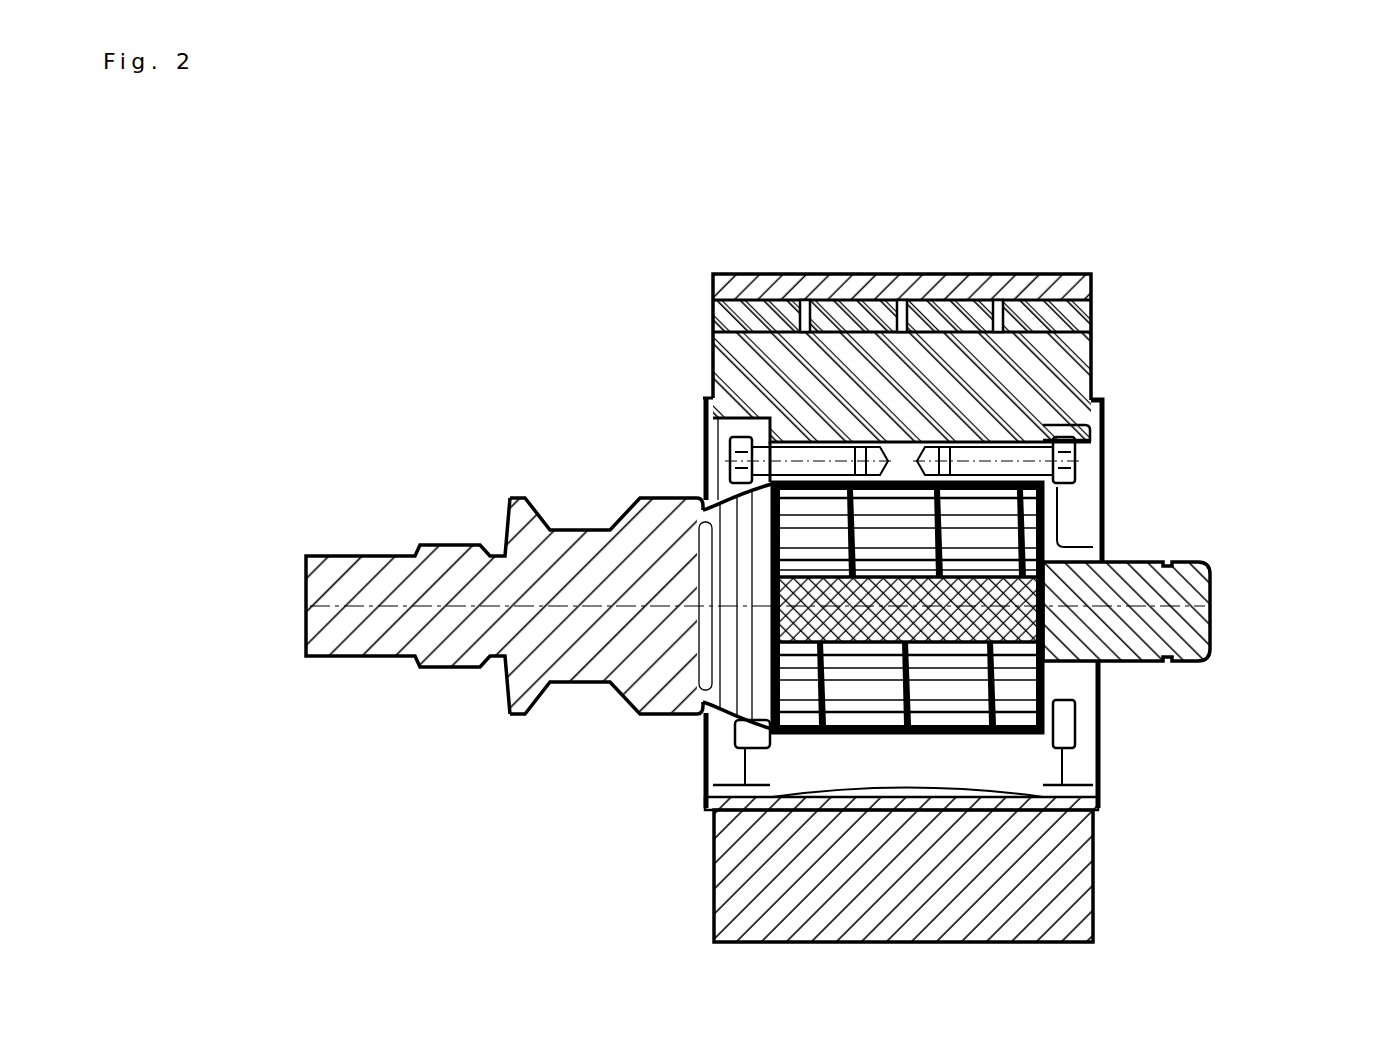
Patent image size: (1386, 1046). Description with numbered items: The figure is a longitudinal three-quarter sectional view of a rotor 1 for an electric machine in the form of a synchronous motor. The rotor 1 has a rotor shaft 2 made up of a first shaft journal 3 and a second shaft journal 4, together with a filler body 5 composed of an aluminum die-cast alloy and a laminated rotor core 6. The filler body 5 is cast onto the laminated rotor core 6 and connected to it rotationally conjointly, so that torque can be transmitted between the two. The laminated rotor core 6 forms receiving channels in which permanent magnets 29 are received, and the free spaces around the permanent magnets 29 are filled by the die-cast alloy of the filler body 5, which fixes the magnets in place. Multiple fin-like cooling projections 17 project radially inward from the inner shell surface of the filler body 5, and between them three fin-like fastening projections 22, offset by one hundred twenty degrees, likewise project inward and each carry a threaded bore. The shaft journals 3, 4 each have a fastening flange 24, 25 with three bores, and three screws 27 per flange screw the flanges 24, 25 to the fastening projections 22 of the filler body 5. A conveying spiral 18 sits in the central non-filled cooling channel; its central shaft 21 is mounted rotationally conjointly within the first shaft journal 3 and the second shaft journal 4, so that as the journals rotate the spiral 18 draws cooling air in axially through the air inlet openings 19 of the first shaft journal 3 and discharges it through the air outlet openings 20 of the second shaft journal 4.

The rotor 1 is at (1262, 318).
The rotor shaft 2 is at (525, 632).
The first shaft journal 3 is at (1130, 640).
The second shaft journal 4 is at (572, 653).
The filler body 5 is at (735, 372).
The laminated rotor core 6 is at (1000, 285).
The cooling projections 17 is at (985, 542).
The conveying spiral 18 is at (863, 500).
The air inlet openings 19 is at (1103, 805).
The air outlet openings 20 is at (708, 802).
The central shaft 21 is at (1020, 600).
The fastening projections 22 is at (785, 430).
The fastening flange 24 is at (1078, 440).
The fastening flange 25 is at (705, 400).
The screws 27 is at (755, 450).
The permanent magnets 29 is at (782, 316).